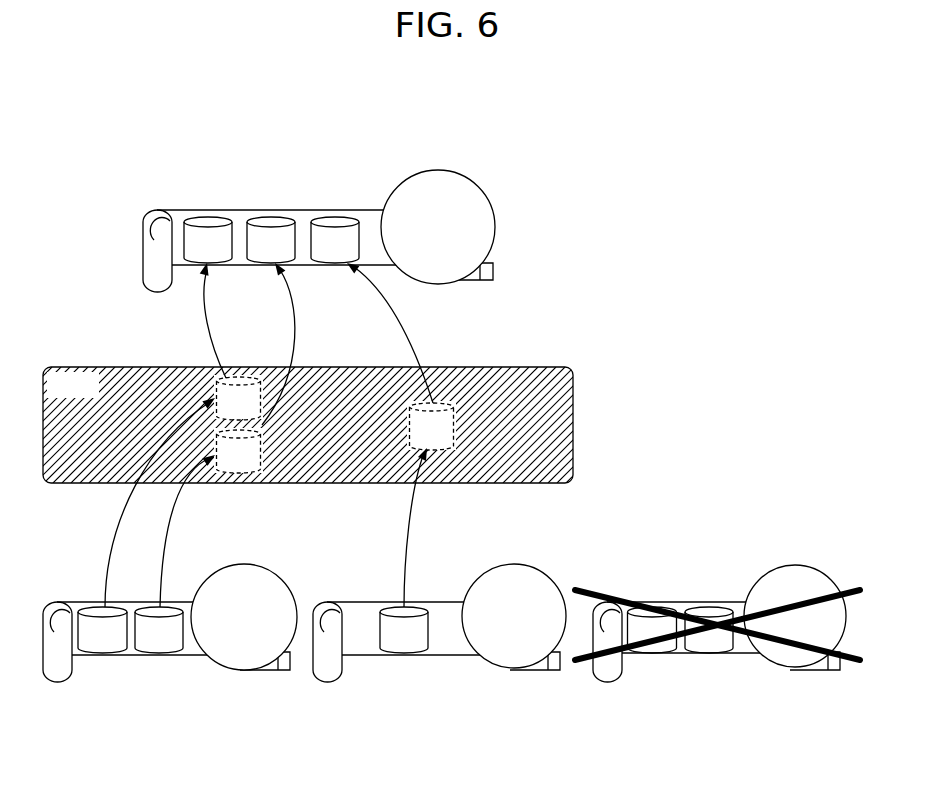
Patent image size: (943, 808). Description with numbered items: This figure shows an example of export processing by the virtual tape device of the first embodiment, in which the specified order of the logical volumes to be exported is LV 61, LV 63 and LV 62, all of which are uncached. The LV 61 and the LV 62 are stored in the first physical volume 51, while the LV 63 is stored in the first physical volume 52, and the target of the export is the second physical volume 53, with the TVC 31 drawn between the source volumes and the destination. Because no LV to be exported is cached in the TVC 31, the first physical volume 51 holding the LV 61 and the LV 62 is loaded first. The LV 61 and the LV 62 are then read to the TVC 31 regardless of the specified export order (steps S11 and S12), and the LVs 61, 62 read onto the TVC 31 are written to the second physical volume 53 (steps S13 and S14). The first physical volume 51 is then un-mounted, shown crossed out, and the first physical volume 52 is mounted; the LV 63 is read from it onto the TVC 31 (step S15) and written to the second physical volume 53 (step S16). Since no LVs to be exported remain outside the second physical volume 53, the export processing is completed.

The TVC 31 is at (90, 367).
The first physical volume 51 is at (240, 672).
The first physical volume 52 is at (512, 670).
The second physical volume 53 is at (439, 170).
The LV 61 is at (207, 216).
The LV 62 is at (271, 216).
The LV 63 is at (334, 216).
The step S11 is at (112, 533).
The step S12 is at (172, 547).
The step S13 is at (205, 292).
The step S14 is at (300, 322).
The step S15 is at (406, 546).
The step S16 is at (410, 322).